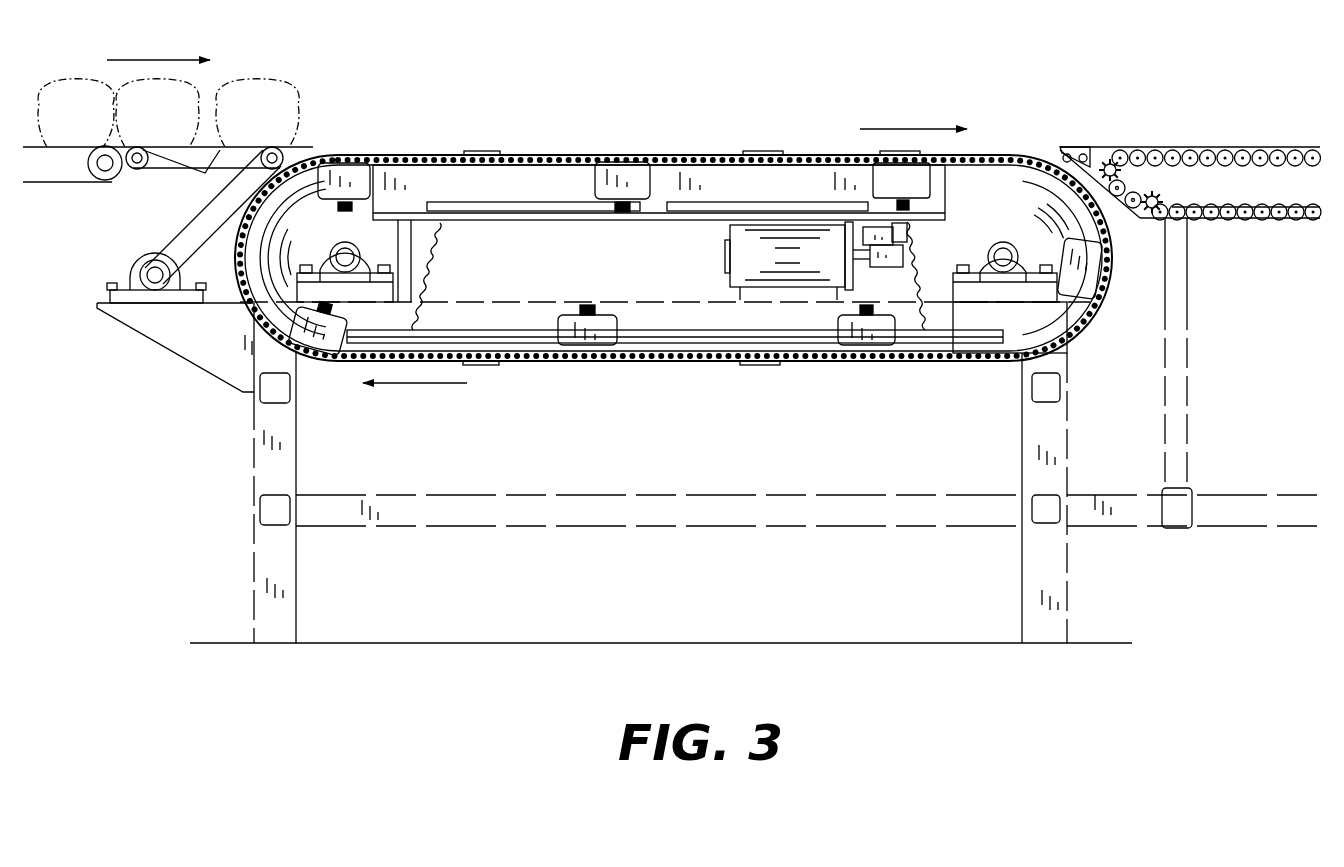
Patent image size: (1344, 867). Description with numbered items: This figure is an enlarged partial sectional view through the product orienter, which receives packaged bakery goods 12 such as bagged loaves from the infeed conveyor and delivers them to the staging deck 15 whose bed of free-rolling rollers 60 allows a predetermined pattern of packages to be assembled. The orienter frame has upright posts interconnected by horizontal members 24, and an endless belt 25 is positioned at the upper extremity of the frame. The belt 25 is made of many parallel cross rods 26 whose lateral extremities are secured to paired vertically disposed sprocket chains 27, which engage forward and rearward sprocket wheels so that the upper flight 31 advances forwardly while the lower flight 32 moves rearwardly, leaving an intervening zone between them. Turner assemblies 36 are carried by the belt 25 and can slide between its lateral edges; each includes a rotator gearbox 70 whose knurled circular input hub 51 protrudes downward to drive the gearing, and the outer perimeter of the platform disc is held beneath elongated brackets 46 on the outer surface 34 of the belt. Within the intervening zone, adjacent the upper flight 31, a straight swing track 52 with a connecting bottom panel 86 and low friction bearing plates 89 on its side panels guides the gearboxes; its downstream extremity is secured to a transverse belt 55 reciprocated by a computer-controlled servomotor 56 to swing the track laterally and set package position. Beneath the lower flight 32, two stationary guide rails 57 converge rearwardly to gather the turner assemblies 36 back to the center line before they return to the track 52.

The packaged bakery goods 12 is at (234, 119).
The staging deck 15 is at (1290, 122).
The horizontal members 24 is at (545, 527).
The endless belt 25 is at (392, 108).
The cross rods 26 is at (828, 155).
The sprocket chains 27 is at (770, 362).
The upper flight 31 is at (730, 154).
The lower flight 32 is at (497, 364).
The outer surface 34 is at (563, 154).
The turner assemblies 36 is at (642, 108).
The elongated brackets 46 is at (1036, 150).
The knurled circular input hub 51 is at (625, 210).
The swing track 52 is at (541, 208).
The transverse belt 55 is at (892, 257).
The servomotor 56 is at (722, 267).
The guide rails 57 is at (748, 362).
The free-rolling rollers 60 is at (1160, 150).
The rotator gearbox 70 is at (918, 192).
The bottom panel 86 is at (608, 222).
The bearing plates 89 is at (492, 197).